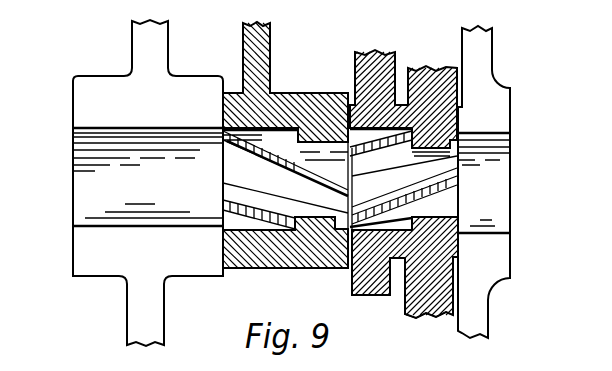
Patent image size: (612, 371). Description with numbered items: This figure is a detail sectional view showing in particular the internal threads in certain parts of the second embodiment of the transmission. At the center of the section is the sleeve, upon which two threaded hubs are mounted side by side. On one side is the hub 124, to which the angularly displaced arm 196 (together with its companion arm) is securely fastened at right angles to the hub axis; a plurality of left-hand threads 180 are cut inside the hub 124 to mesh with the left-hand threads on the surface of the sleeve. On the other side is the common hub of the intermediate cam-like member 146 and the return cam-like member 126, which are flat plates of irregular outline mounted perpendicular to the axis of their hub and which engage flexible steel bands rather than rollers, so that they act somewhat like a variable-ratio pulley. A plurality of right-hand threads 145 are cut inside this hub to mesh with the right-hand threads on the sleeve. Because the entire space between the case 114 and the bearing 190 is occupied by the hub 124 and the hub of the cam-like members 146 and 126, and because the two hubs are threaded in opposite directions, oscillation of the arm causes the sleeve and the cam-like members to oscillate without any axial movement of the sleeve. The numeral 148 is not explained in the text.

The case 114 is at (482, 48).
The hub 124 is at (272, 258).
The return cam-like member 126 is at (373, 285).
The right-hand threads 145 is at (402, 192).
The intermediate cam-like member 146 is at (427, 303).
The shaft end 148 is at (138, 48).
The left-hand threads 180 is at (268, 160).
The bearing 190 is at (83, 100).
The arm 196 is at (260, 42).